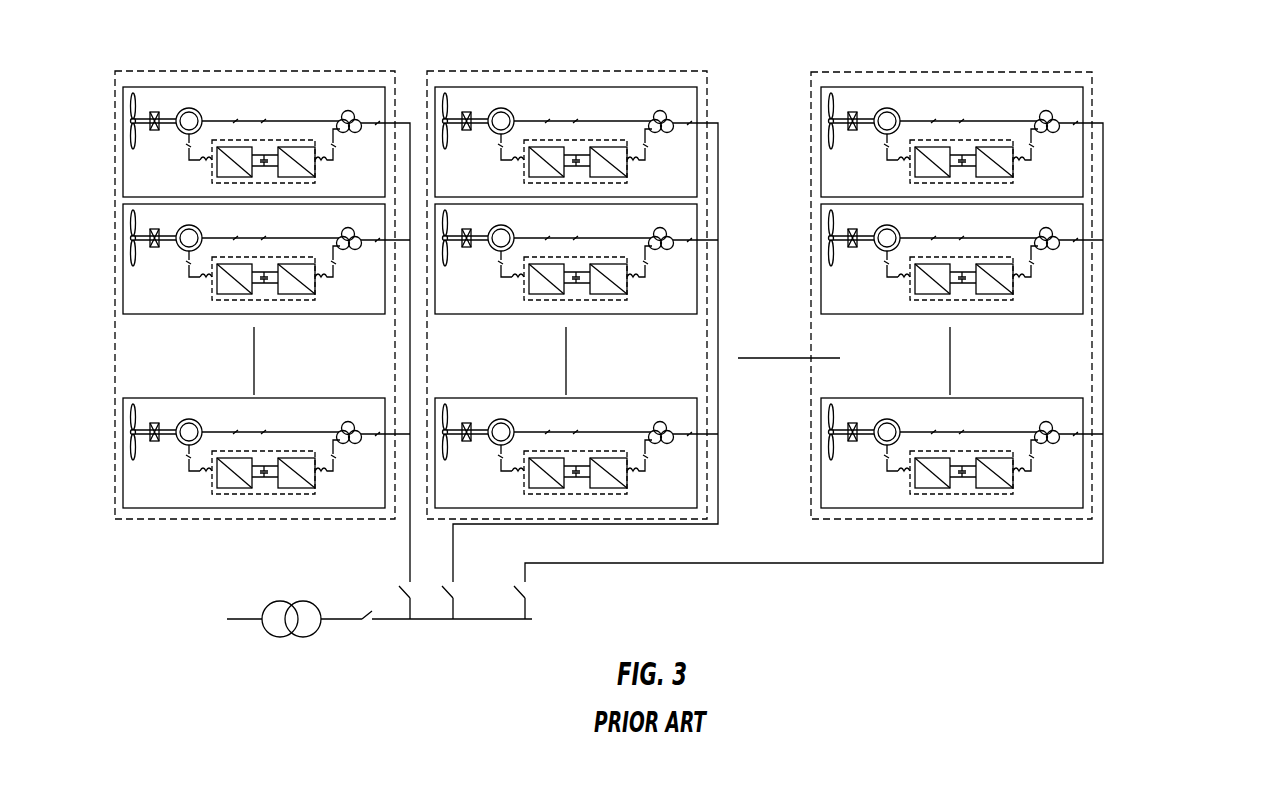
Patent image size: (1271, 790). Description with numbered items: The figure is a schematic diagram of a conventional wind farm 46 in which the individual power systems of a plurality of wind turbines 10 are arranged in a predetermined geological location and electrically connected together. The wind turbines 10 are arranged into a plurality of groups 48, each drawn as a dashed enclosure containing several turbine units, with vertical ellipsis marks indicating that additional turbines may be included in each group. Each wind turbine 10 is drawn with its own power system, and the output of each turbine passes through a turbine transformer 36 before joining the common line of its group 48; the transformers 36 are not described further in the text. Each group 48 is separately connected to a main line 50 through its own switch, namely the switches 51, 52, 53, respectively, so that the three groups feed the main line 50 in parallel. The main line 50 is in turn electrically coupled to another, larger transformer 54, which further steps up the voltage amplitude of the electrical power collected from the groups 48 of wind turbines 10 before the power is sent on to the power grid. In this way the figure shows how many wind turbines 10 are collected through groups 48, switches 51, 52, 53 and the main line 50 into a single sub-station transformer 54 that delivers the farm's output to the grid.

The wind turbine 10 is at (576, 297).
The turbine transformer 36 is at (383, 117).
The wind farm 46 is at (665, 370).
The group 48 is at (174, 524).
The main line 50 is at (665, 395).
The switch 51 is at (397, 591).
The switch 52 is at (441, 591).
The switch 53 is at (512, 591).
The transformer 54 is at (291, 598).